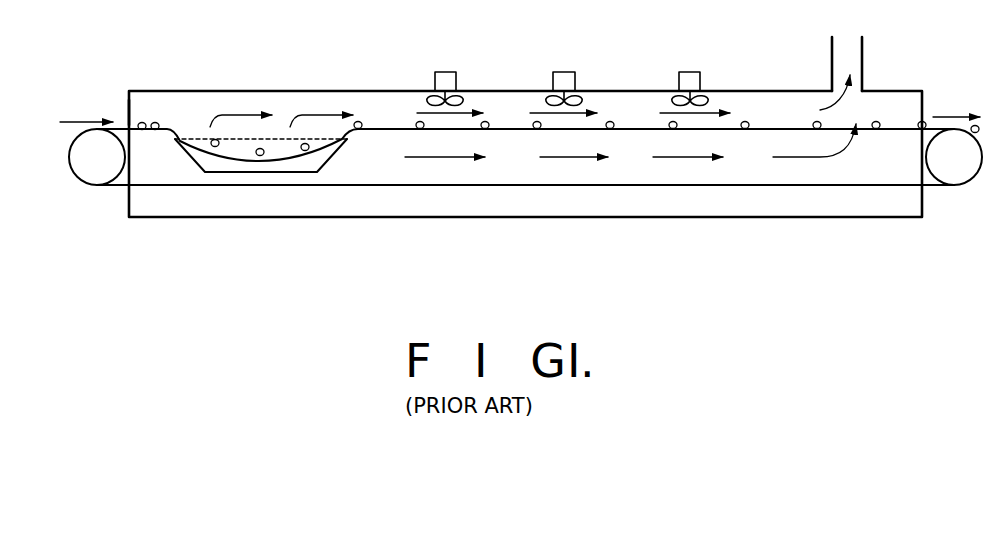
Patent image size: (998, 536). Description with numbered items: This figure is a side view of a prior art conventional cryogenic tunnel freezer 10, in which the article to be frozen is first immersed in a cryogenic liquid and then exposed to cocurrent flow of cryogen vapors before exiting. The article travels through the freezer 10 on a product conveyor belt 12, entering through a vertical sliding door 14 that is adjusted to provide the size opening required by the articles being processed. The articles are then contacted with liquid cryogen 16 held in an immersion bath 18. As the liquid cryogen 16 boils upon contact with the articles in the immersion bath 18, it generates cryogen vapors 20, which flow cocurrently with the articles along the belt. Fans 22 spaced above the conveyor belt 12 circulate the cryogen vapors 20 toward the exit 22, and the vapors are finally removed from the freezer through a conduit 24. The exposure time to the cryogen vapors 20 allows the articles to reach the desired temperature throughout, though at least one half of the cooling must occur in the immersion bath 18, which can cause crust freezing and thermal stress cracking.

The freezer 10 is at (887, 86).
The product conveyor belt 12 is at (125, 127).
The vertical sliding door 14 is at (126, 118).
The liquid cryogen 16 is at (280, 140).
The immersion bath 18 is at (333, 157).
The cryogen vapors 20 is at (325, 115).
The fans 22 is at (563, 72).
The conduit 24 is at (848, 35).